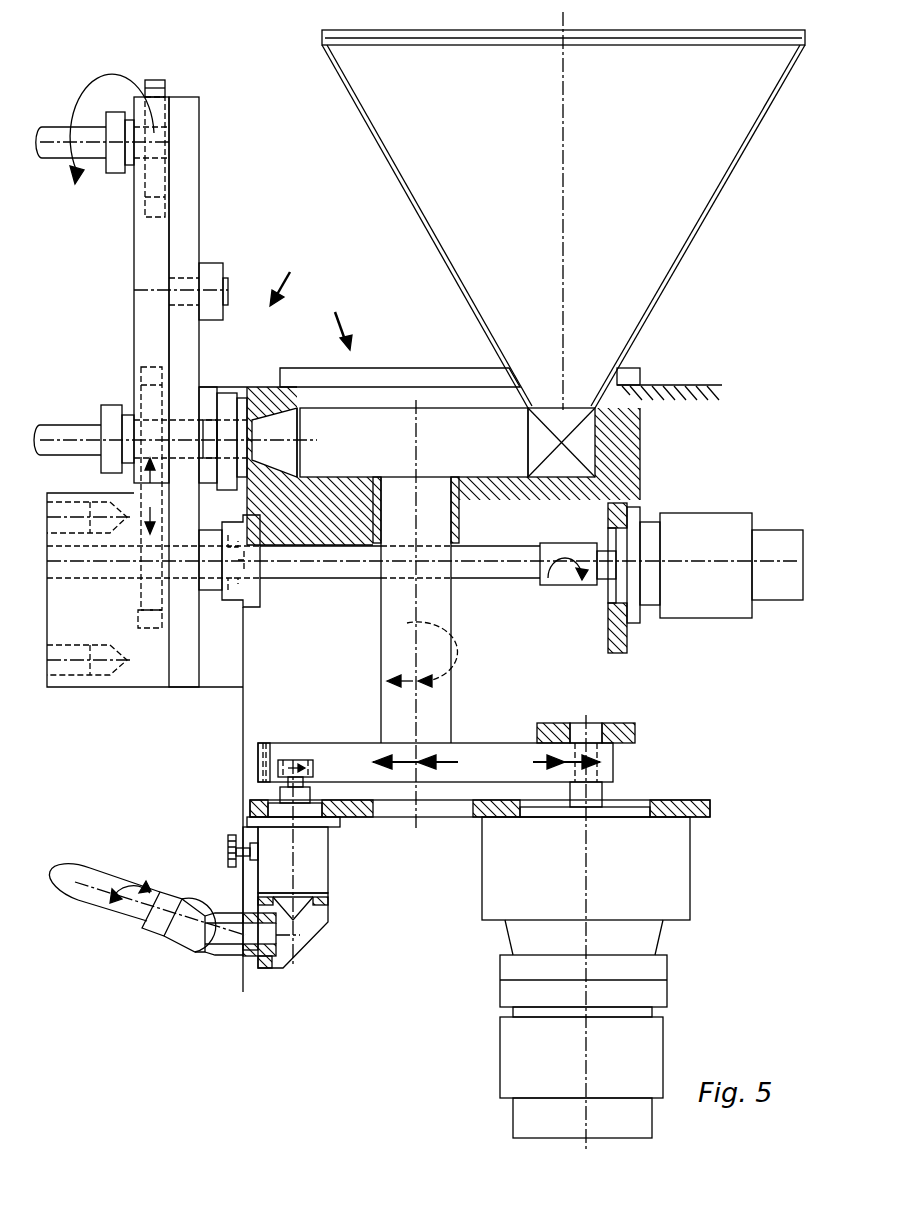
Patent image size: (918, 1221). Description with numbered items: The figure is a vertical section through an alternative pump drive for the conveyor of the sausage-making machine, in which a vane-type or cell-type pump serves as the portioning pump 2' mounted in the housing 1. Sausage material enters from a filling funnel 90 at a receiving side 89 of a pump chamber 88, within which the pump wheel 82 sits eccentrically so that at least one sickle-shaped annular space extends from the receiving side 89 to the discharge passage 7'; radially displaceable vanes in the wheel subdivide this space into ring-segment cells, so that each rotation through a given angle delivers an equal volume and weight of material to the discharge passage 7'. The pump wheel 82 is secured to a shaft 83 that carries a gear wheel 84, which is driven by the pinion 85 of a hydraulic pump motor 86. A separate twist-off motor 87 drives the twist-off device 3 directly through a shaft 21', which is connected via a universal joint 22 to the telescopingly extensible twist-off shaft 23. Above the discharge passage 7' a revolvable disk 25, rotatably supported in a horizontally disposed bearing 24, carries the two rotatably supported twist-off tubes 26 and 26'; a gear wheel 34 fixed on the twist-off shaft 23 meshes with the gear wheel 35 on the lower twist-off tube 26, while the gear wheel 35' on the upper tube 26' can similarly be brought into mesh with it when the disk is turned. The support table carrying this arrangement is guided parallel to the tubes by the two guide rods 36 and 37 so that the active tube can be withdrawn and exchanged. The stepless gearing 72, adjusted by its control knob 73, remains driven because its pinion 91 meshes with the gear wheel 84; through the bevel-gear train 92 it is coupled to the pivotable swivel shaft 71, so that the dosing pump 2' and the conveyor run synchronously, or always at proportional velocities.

The housing 1 is at (677, 398).
The portioning pump 2' is at (352, 327).
The twist-off device 3 is at (289, 286).
The discharge passage 7' is at (271, 413).
The shaft 21' is at (423, 580).
The universal joint 22 is at (242, 578).
The twist-off shaft 23 is at (74, 563).
The bearing 24 is at (183, 303).
The revolvable disk 25 is at (146, 240).
The twist-off tube 26 is at (125, 429).
The twist-off tube 26' is at (102, 146).
The gear wheel 34 is at (147, 618).
The gear wheel 35 is at (122, 478).
The gear wheel 35' is at (194, 135).
The guide rod 36 is at (84, 512).
The guide rod 37 is at (77, 663).
The swivel shaft 71 is at (122, 905).
The steplessly adjustable transmission 72 is at (291, 862).
The control knob 73 is at (228, 842).
The pump wheel 82 is at (284, 442).
The shaft 83 is at (419, 615).
The gear wheel 84 is at (479, 753).
The pinion 85 is at (610, 757).
The hydraulic pump motor 86 is at (586, 977).
The twist-off motor 87 is at (705, 578).
The pump chamber 88 is at (300, 476).
The receiving side 89 is at (549, 466).
The filling funnel 90 is at (563, 211).
The pinion 91 is at (300, 768).
The bevel-gear train 92 is at (285, 917).